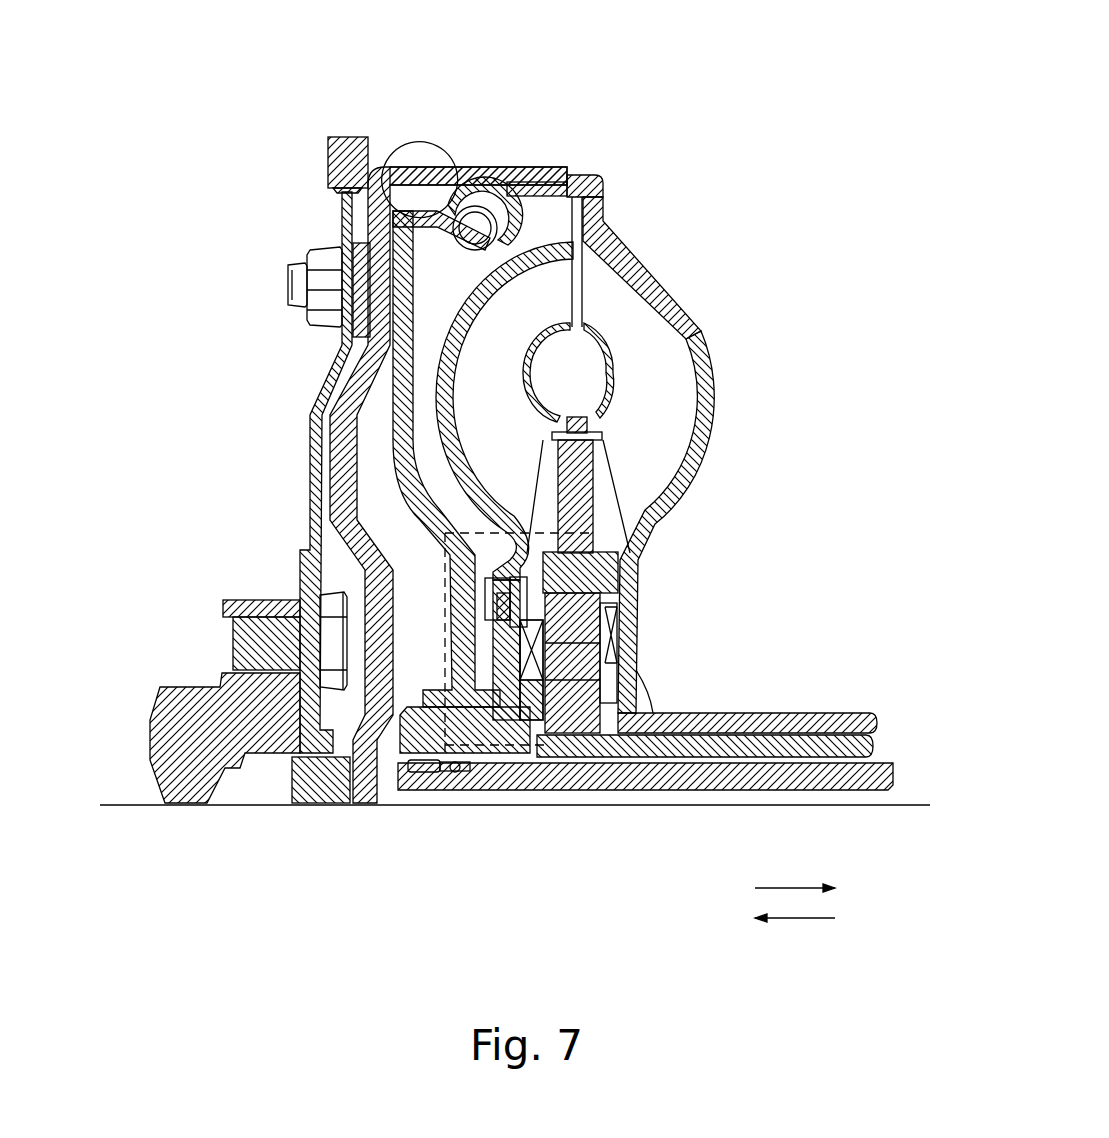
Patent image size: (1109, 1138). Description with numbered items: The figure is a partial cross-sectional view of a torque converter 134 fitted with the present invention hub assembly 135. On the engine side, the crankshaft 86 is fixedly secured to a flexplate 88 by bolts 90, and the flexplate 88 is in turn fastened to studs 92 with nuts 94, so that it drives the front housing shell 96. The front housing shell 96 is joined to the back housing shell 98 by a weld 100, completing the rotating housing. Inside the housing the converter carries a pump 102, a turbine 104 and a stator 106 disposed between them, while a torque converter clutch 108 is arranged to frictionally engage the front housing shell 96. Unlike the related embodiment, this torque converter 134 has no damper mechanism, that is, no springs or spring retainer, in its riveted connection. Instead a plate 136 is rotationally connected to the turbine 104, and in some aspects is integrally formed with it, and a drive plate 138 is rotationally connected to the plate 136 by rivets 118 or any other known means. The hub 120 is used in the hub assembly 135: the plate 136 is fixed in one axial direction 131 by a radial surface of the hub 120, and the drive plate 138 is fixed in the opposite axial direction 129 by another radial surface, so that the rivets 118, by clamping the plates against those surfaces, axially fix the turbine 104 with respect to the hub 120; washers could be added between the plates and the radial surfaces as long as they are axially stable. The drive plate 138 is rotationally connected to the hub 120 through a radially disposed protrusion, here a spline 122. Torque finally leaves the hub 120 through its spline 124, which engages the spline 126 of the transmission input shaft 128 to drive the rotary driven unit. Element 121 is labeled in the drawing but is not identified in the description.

The crankshaft 86 is at (162, 713).
The flexplate 88 is at (315, 402).
The bolts 90 is at (257, 647).
The studs 92 is at (293, 295).
The nuts 94 is at (322, 262).
The front housing shell 96 is at (520, 168).
The back housing shell 98 is at (640, 250).
The weld 100 is at (557, 172).
The pump 102 is at (700, 318).
The turbine 104 is at (455, 475).
The stator 106 is at (600, 497).
The torque converter clutch 108 is at (410, 458).
The rivets 118 is at (500, 600).
The hub 120 is at (405, 745).
The block 121 is at (375, 752).
The spline 122 is at (510, 693).
The spline 124 is at (441, 768).
The spline 126 is at (467, 765).
The transmission input shaft 128 is at (445, 772).
The axial direction 129 is at (805, 918).
The axial direction 131 is at (785, 888).
The torque converter 134 is at (735, 125).
The hub assembly 135 is at (553, 537).
The plate 136 is at (497, 663).
The drive plate 138 is at (523, 717).